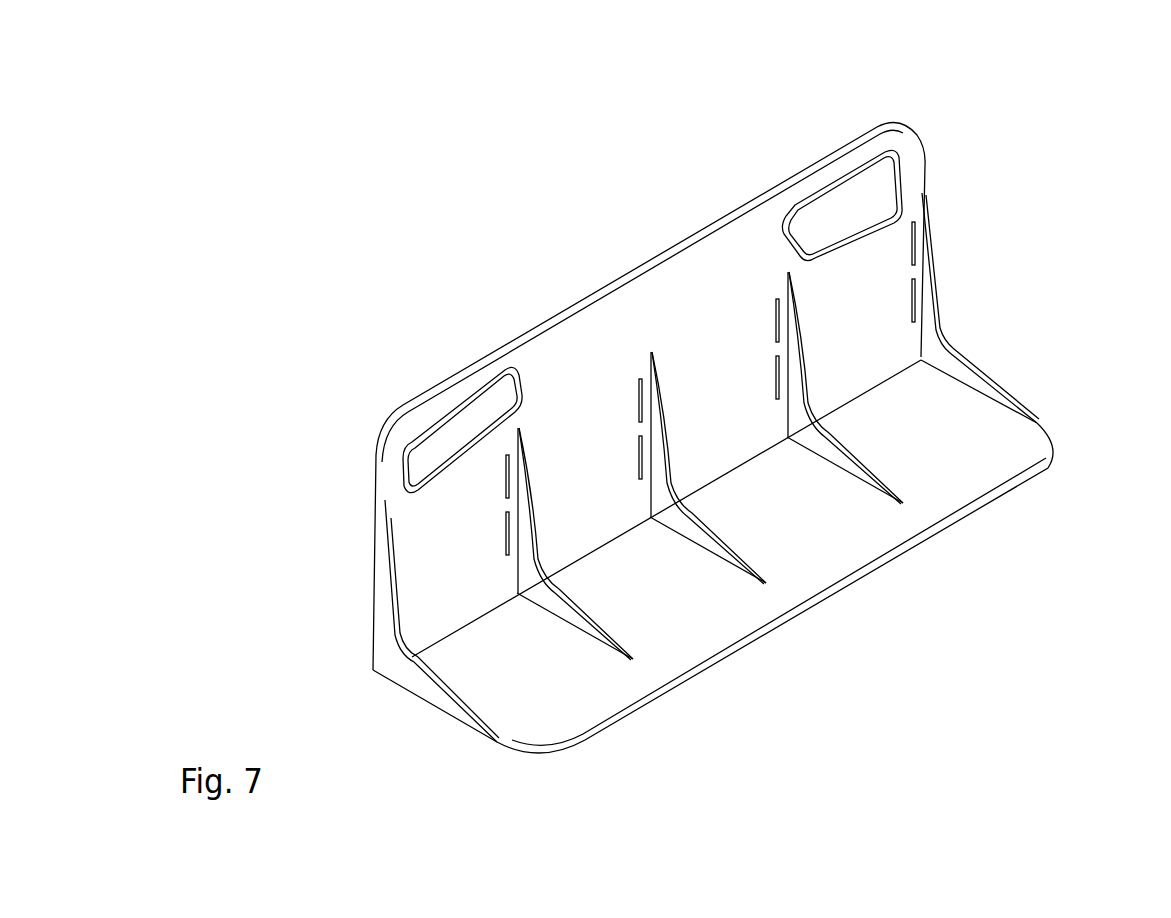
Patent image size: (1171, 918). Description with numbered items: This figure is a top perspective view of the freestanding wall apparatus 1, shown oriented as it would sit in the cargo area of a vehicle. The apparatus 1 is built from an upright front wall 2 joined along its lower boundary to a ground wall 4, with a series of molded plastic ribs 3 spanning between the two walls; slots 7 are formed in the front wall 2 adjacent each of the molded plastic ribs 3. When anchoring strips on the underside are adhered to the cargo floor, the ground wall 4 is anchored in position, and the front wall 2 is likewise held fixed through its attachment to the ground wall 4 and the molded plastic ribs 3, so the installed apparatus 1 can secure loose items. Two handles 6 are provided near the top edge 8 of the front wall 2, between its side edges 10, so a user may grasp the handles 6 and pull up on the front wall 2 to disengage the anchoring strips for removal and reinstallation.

The freestanding wall apparatus 1 is at (268, 505).
The front wall 2 is at (645, 283).
The molded plastic ribs 3 is at (943, 342).
The ground wall 4 is at (800, 533).
The handles 6 is at (845, 200).
The slots 7 is at (917, 230).
The top edge 8 is at (543, 318).
The side edge 10 is at (371, 480).